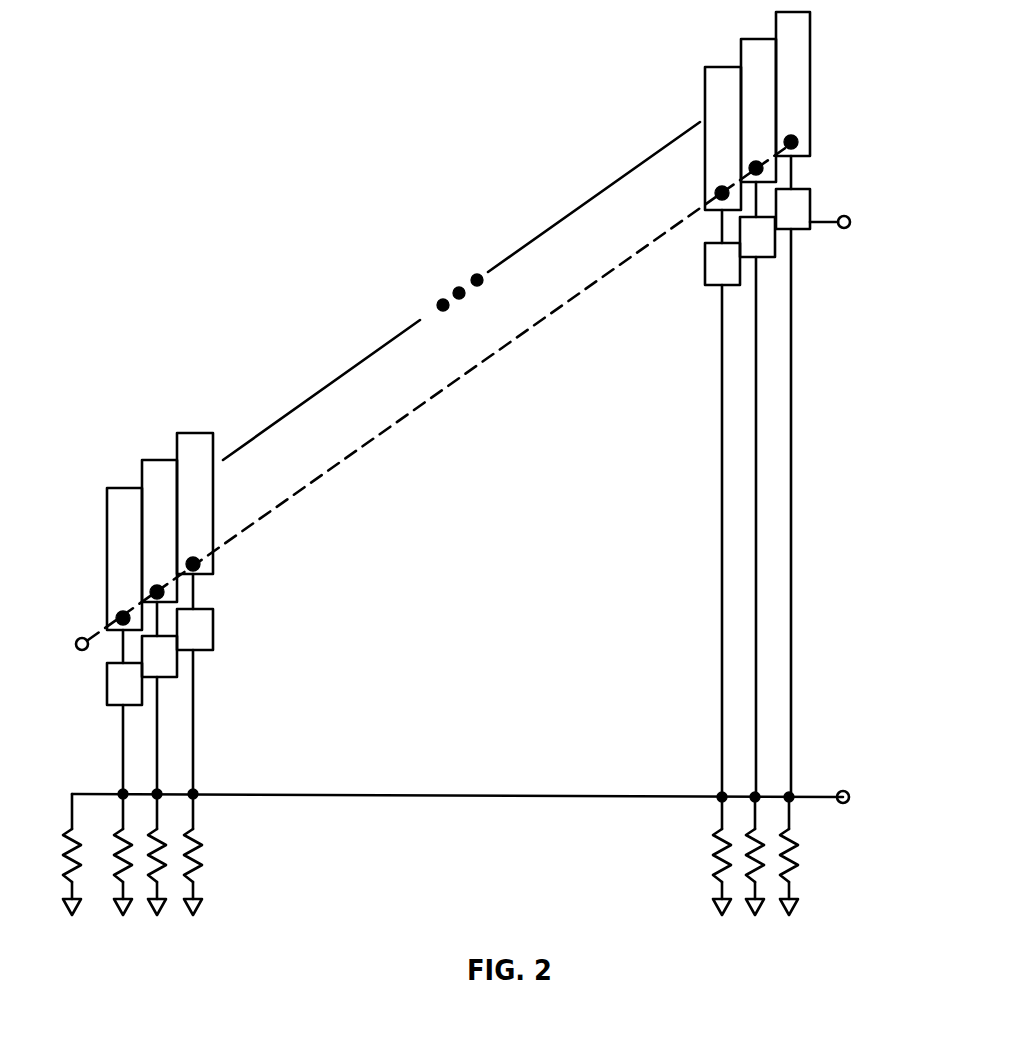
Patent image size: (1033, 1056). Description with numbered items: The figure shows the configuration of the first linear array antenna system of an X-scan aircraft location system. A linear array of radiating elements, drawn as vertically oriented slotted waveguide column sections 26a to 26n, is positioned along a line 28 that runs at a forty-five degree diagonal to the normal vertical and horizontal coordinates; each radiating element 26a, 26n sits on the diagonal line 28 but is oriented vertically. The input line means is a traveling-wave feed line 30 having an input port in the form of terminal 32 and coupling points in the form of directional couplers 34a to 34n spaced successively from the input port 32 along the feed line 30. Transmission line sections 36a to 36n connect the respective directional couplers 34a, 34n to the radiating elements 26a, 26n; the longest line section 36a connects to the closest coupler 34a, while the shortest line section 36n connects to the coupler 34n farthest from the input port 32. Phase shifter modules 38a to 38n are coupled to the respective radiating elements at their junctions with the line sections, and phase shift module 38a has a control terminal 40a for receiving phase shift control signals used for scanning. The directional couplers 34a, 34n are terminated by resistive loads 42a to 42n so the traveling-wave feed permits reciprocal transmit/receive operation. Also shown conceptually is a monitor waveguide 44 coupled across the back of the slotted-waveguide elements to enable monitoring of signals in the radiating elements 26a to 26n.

The slotted waveguide column section 26a is at (812, 60).
The slotted waveguide column section 26n is at (107, 535).
The line 28 is at (550, 227).
The traveling-wave feed line 30 is at (468, 795).
The terminal 32 is at (849, 790).
The directional coupler 34a is at (792, 796).
The directional coupler 34n is at (120, 792).
The transmission line section 36a is at (793, 430).
The transmission line section 36n is at (122, 748).
The phase shifter module 38a is at (812, 200).
The phase shifter module 38n is at (107, 688).
The control terminal 40a is at (849, 228).
The resistive load 42a is at (797, 853).
The resistive load 42n is at (117, 878).
The waveguide 44 is at (465, 378).